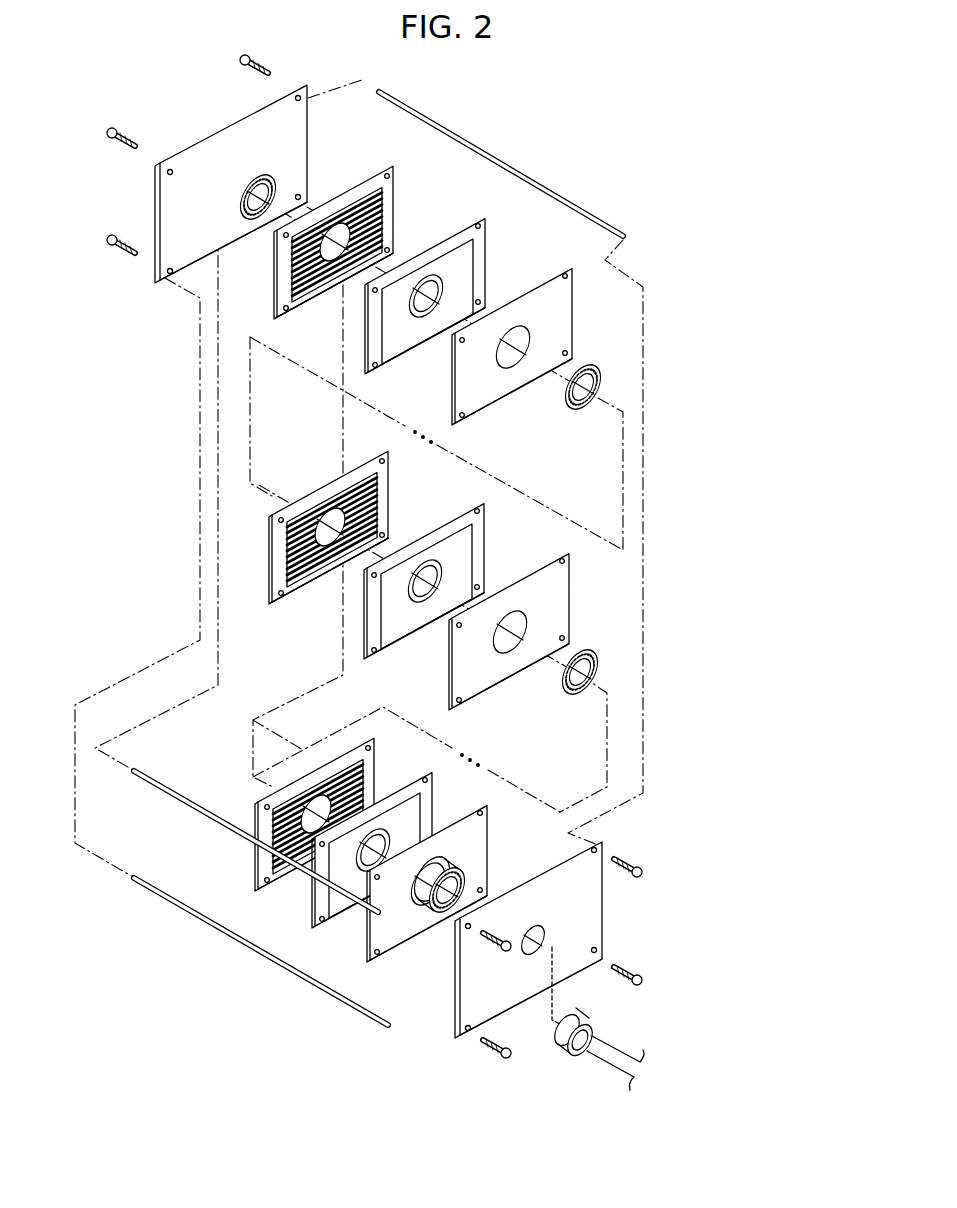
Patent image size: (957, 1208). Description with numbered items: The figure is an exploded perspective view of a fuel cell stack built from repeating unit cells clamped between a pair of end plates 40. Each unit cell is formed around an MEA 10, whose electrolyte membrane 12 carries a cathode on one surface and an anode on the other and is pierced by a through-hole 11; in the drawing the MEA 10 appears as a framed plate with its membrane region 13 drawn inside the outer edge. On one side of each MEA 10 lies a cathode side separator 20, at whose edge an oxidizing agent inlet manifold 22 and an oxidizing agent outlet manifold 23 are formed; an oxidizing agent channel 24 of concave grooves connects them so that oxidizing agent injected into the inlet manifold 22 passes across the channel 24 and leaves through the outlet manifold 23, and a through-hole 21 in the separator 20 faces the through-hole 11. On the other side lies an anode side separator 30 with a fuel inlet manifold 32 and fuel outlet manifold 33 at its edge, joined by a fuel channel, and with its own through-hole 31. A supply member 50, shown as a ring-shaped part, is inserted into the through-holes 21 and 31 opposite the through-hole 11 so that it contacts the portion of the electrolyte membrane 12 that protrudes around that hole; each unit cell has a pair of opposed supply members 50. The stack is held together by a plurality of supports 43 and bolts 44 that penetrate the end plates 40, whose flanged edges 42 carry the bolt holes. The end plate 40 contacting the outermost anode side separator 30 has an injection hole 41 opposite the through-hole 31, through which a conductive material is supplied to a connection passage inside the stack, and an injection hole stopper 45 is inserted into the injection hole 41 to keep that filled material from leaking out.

The MEA 10 is at (397, 560).
The through-hole 11 is at (426, 314).
The electrolyte membrane 12 is at (479, 289).
The recess of fixing plate 13 is at (464, 264).
The cathode side separator 20 is at (324, 523).
The through-hole 21 is at (332, 258).
The oxidizing agent inlet manifold 22 is at (278, 247).
The oxidizing agent outlet manifold 23 is at (379, 261).
The oxidizing agent channel 24 is at (384, 201).
The anode side separator 30 is at (487, 627).
The through-hole 31 is at (509, 354).
The fuel inlet manifold 32 is at (568, 274).
The fuel outlet manifold 33 is at (464, 415).
The end plate 40 is at (375, 576).
The injection hole 41 is at (532, 949).
The flange of end plate 42 is at (159, 178).
The support 43 is at (507, 166).
The bolt 44 is at (620, 984).
The injection hole stopper 45 is at (572, 1044).
The supply member 50 is at (257, 177).